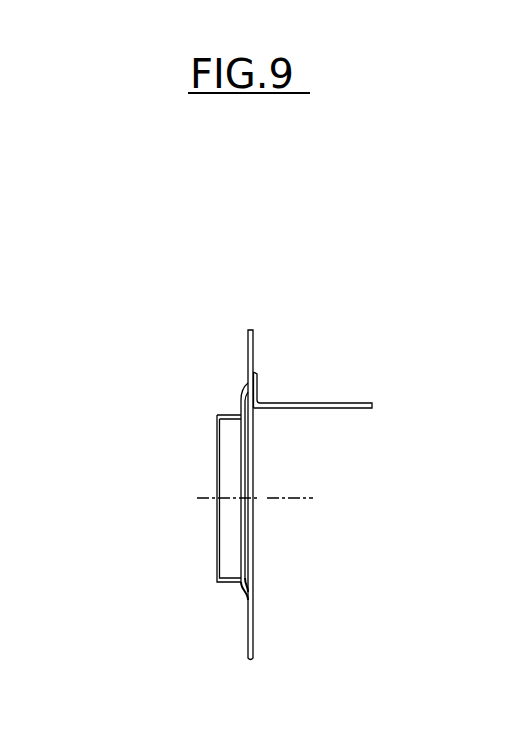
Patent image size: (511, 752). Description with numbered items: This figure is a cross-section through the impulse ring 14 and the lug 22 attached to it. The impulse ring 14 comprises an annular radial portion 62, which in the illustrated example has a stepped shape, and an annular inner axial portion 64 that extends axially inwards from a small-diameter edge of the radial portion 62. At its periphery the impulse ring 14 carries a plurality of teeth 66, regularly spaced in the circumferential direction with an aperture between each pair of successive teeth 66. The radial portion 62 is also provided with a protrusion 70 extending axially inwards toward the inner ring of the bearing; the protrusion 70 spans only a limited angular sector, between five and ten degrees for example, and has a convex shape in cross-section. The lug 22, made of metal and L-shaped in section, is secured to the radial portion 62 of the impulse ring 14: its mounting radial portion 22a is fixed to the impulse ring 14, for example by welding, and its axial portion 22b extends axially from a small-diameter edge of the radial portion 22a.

The impulse ring 14 is at (212, 318).
The teeth 66 is at (249, 327).
The lug 22 is at (263, 373).
The mounting radial portion 22a is at (259, 393).
The axial portion 22b is at (361, 409).
The annular radial portion 62 is at (245, 393).
The annular inner axial portion 64 is at (217, 427).
The protrusion 70 is at (240, 592).